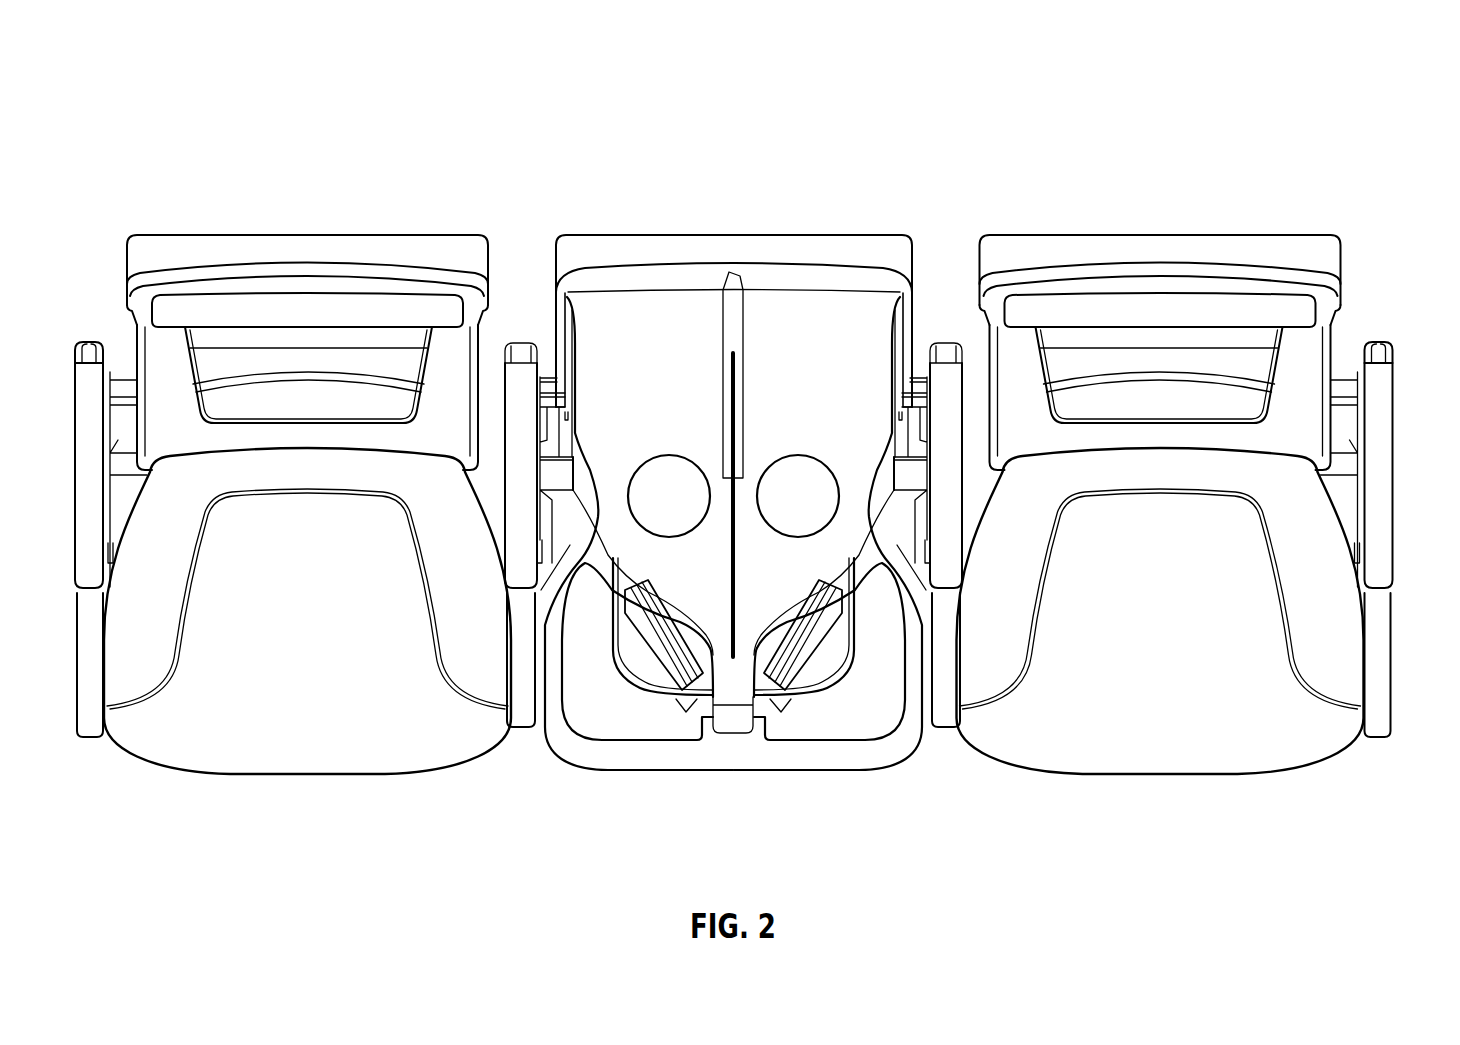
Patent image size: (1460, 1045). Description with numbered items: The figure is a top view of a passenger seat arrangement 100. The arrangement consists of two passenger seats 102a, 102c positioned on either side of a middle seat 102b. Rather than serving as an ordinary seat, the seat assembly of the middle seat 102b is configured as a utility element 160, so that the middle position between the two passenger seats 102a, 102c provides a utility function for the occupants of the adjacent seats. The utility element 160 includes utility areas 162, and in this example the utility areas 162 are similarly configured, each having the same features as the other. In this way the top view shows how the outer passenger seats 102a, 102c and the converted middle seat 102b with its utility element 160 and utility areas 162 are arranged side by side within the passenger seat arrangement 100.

The passenger seat arrangement 100 is at (1349, 82).
The passenger seat 102a is at (333, 84).
The middle seat 102b is at (746, 204).
The passenger seat 102c is at (1178, 91).
The utility element 160 is at (839, 124).
The utility areas 162 is at (671, 192).